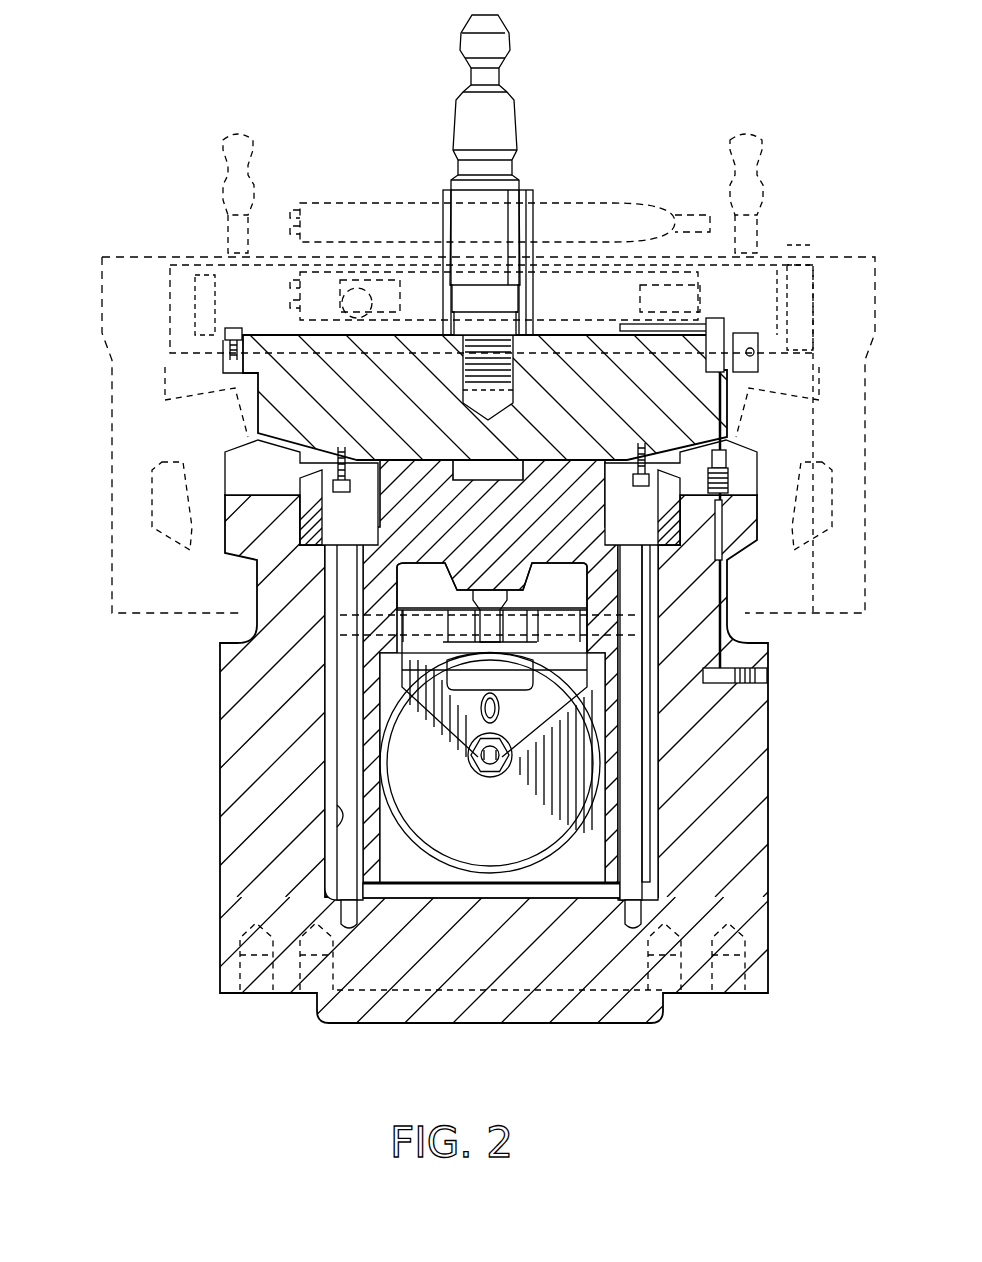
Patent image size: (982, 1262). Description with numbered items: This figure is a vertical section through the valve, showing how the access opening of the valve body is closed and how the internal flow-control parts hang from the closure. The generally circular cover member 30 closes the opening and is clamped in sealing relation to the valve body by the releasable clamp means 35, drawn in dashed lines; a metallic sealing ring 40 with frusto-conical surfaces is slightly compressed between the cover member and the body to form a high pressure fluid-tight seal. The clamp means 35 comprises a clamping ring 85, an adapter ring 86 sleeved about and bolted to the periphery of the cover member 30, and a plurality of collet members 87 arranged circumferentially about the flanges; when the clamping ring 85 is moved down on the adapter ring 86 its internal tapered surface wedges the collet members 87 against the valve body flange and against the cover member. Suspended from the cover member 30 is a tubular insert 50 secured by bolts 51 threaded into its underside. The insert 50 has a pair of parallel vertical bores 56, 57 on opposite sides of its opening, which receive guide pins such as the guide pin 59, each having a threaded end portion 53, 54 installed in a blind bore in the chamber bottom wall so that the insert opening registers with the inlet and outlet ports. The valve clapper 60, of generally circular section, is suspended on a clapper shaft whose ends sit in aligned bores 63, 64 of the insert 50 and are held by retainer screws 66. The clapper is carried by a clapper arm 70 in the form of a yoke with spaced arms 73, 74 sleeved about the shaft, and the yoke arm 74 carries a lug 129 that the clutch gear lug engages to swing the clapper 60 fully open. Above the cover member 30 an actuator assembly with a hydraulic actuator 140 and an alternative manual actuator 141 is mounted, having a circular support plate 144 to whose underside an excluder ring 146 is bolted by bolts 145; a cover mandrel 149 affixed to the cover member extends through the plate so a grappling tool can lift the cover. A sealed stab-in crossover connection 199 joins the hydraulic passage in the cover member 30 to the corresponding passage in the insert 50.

The cover member 30 is at (390, 396).
The clamp means 35 is at (92, 280).
The sealing ring 40 is at (310, 510).
The tubular insert 50 is at (548, 534).
The bolts 51 is at (338, 447).
The threaded end portion 53 is at (340, 915).
The threaded end portion 54 is at (645, 912).
The vertical bore 56 is at (337, 828).
The vertical bore 57 is at (642, 802).
The guide pin 59 is at (638, 735).
The valve clapper 60 is at (500, 820).
The aligned bore 63 is at (492, 602).
The aligned bore 64 is at (632, 612).
The retainer screws 66 is at (348, 628).
The clapper arm 70 is at (426, 730).
The yoke arm 73 is at (402, 662).
The yoke arm 74 is at (587, 672).
The clamping ring 85 is at (838, 497).
The adapter ring 86 is at (787, 342).
The collet members 87 is at (190, 440).
The lug 129 is at (518, 708).
The hydraulic actuator 140 is at (675, 279).
The manual actuator 141 is at (381, 199).
The support plate 144 is at (255, 258).
The bolts 145 is at (787, 245).
The excluder ring 146 is at (777, 288).
The cover mandrel 149 is at (518, 115).
The crossover connection 199 is at (740, 456).